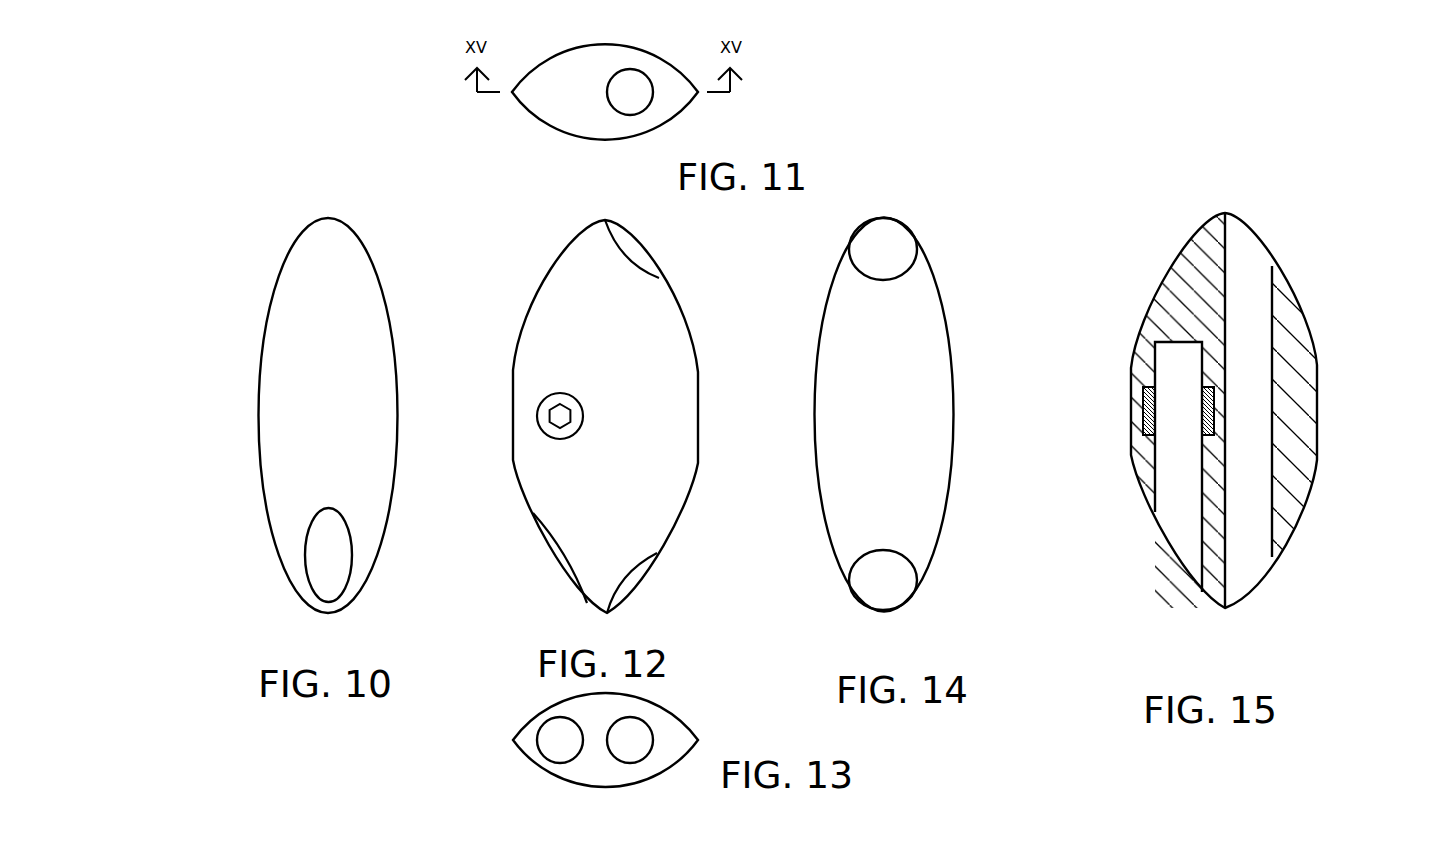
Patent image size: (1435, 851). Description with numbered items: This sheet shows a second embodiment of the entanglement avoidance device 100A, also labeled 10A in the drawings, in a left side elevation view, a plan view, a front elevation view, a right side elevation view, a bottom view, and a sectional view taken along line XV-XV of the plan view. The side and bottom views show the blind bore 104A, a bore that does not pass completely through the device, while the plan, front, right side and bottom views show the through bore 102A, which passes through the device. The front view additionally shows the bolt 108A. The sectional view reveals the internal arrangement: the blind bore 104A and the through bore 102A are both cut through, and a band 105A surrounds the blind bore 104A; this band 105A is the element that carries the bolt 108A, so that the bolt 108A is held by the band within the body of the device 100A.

In FIG. 10, the protective device assembly 10A is at (320, 380).
In FIG. 11, the protective device assembly 10A is at (512, 93).
In FIG. 12, the protective device assembly 10A is at (542, 296).
In FIG. 15, the protective device assembly 10A is at (1170, 281).
In FIG. 10, the entanglement avoidance device 100A is at (320, 285).
In FIG. 11, the entanglement avoidance device 100A is at (552, 95).
In FIG. 12, the entanglement avoidance device 100A is at (596, 287).
In FIG. 13, the entanglement avoidance device 100A is at (583, 770).
In FIG. 14, the entanglement avoidance device 100A is at (913, 327).
In FIG. 15, the entanglement avoidance device 100A is at (1143, 457).
In FIG. 11, the through bore 102A is at (640, 77).
In FIG. 12, the through bore 102A is at (627, 255).
In FIG. 13, the through bore 102A is at (637, 740).
In FIG. 14, the through bore 102A is at (880, 253).
In FIG. 15, the through bore 102A is at (1252, 275).
In FIG. 10, the blind bore 104A is at (327, 554).
In FIG. 12, the blind bore 104A is at (557, 567).
In FIG. 13, the blind bore 104A is at (558, 738).
In FIG. 15, the blind bore 104A is at (1170, 518).
In FIG. 15, the band 105A is at (1149, 414).
In FIG. 12, the bolt 108A is at (557, 408).